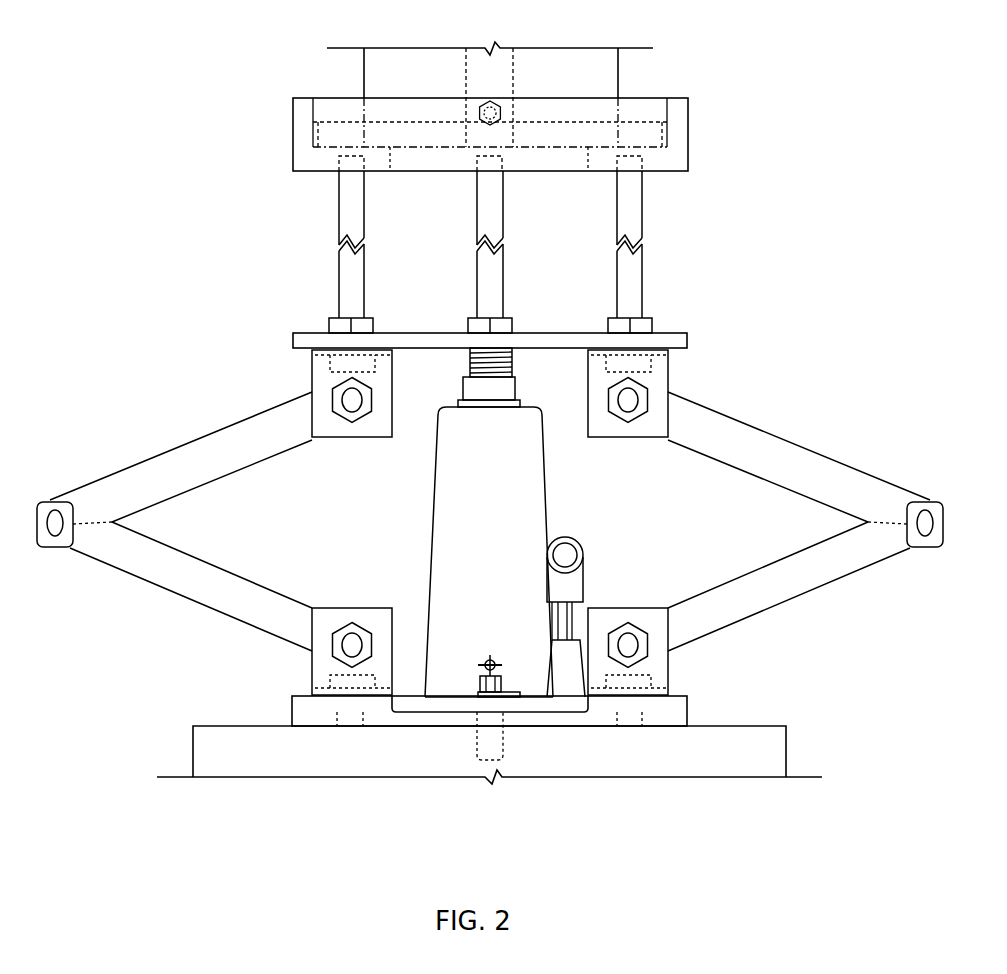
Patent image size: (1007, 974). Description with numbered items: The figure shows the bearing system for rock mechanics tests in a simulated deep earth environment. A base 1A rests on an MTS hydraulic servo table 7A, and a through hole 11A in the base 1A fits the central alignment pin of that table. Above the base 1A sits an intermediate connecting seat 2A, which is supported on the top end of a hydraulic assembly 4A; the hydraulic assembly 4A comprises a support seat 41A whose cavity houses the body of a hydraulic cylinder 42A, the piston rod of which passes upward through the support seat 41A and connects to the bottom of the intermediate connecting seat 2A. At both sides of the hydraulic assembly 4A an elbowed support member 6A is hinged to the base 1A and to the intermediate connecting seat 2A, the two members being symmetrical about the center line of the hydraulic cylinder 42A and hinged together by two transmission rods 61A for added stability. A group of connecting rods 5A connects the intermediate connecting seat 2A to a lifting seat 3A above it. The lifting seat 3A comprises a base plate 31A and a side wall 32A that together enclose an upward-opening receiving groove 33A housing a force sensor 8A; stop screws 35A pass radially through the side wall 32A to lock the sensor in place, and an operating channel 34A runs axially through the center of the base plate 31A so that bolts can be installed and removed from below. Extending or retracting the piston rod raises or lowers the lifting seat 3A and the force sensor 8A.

The base 1A is at (312, 705).
The intermediate connecting seat 2A is at (318, 343).
The lifting seat 3A is at (505, 141).
The hydraulic assembly 4A is at (484, 522).
The connecting rod 5A is at (352, 277).
The elbowed support member 6A is at (490, 522).
The MTS hydraulic servo table 7A is at (219, 755).
The force sensor 8A is at (415, 65).
The through hole 11A is at (487, 657).
The base plate 31A is at (652, 163).
The side wall 32A is at (678, 120).
The receiving groove 33A is at (645, 112).
The operating channel 34A is at (537, 151).
The stop screw 35A is at (479, 112).
The support seat 41A is at (490, 543).
The hydraulic cylinder 42A is at (488, 388).
The transmission rod 61A is at (233, 453).